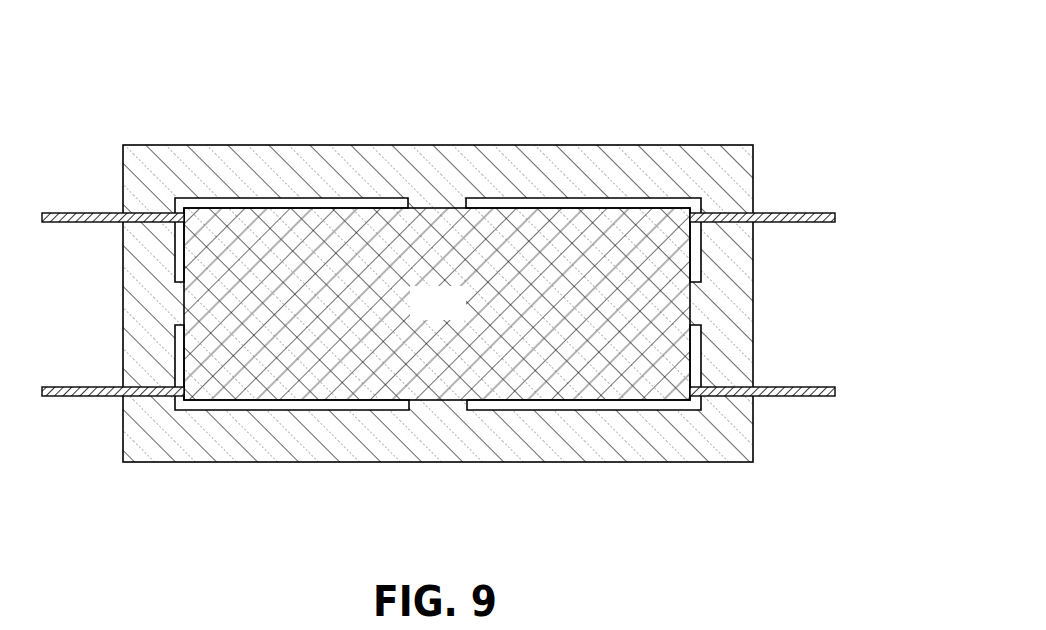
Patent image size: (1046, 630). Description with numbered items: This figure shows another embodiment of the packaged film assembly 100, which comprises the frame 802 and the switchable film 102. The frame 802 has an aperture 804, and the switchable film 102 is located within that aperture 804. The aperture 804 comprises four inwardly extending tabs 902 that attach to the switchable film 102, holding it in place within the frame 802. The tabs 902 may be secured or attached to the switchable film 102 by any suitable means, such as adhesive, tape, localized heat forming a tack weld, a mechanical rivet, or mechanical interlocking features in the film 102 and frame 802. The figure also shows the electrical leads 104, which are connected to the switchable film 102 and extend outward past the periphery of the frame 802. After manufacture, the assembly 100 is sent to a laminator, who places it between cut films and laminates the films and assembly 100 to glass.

The packaged film assembly 100 is at (466, 261).
The switchable film 102 is at (459, 316).
The electrical leads 104 is at (782, 387).
The frame 802 is at (663, 146).
The aperture 804 is at (522, 407).
The tabs 902 is at (407, 404).